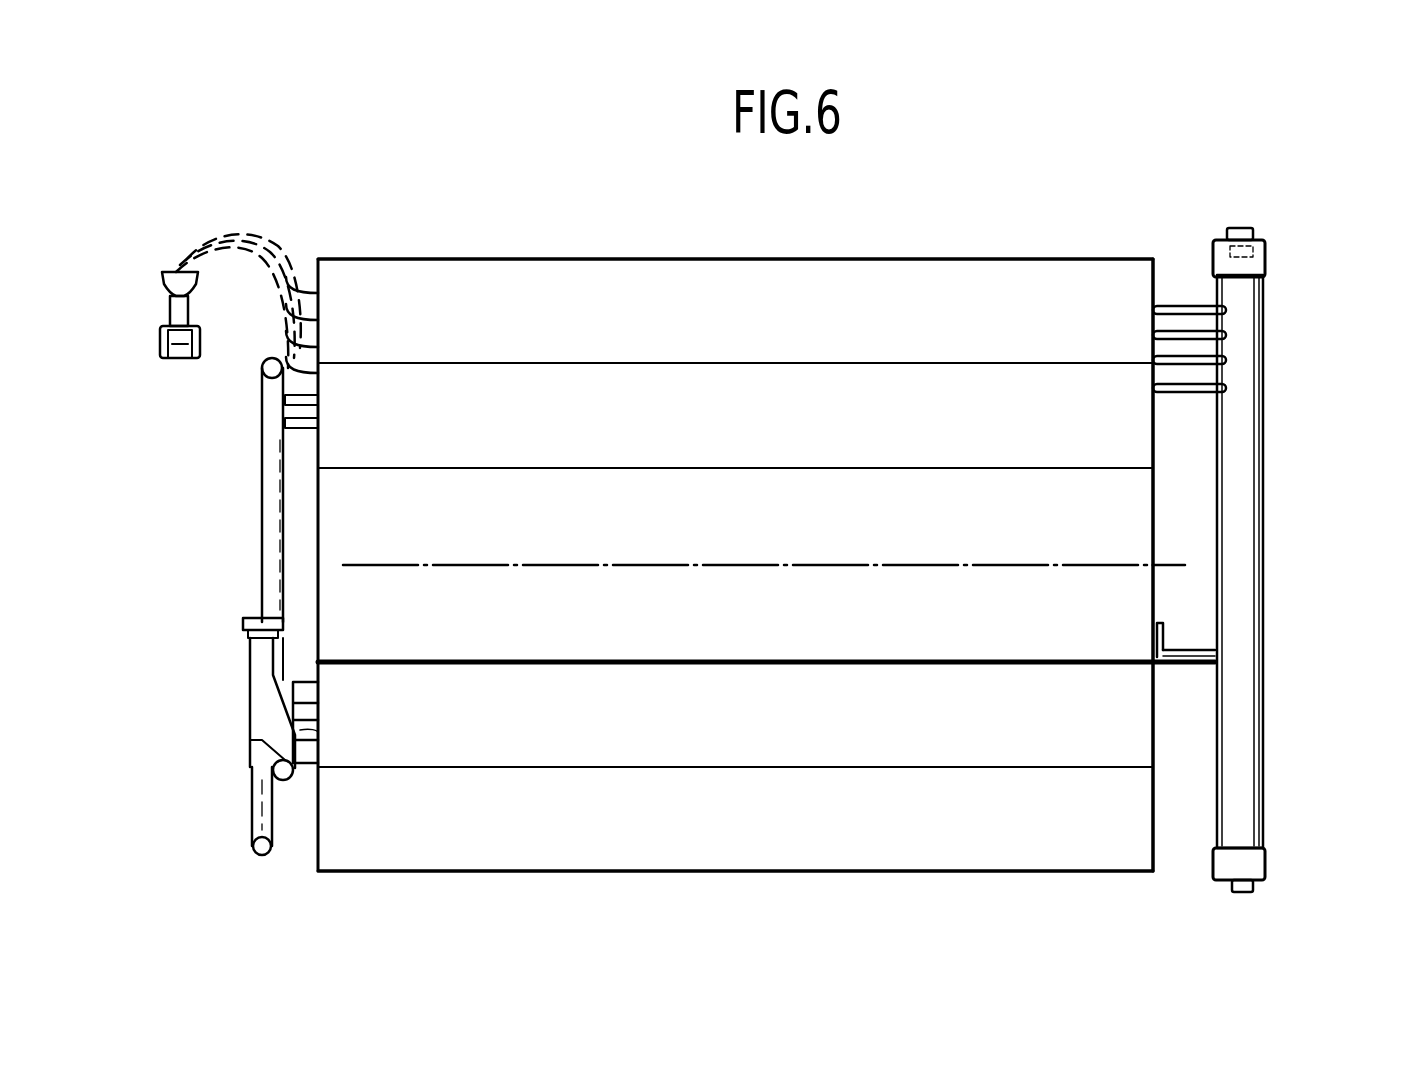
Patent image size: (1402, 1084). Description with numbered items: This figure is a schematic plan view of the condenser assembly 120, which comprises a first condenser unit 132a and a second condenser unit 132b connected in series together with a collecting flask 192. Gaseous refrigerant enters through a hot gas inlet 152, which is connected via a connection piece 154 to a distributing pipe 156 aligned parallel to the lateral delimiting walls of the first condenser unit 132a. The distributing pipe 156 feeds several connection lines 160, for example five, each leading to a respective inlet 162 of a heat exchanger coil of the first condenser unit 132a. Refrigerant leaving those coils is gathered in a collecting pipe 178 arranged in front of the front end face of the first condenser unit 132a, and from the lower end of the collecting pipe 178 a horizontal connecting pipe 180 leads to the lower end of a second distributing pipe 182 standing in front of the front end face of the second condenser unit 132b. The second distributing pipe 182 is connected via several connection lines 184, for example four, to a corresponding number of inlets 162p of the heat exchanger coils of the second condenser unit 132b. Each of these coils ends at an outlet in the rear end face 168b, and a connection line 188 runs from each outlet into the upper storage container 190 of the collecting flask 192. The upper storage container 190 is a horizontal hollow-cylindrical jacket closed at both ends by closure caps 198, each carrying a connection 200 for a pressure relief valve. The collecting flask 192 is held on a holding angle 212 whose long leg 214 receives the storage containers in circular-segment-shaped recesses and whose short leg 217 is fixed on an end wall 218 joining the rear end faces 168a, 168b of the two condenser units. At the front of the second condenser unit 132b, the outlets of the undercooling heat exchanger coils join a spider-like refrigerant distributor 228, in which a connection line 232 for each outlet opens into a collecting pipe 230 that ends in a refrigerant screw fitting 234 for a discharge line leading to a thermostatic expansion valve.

The condenser assembly 120 is at (1100, 232).
The first condenser unit 132a is at (470, 830).
The second condenser unit 132b is at (532, 315).
The hot gas inlet 152 is at (250, 625).
The connection piece 154 is at (262, 672).
The distributing pipe 156 is at (255, 760).
The connection lines 160 is at (324, 712).
The inlet 162 is at (313, 733).
The inlets 162p is at (318, 393).
The rear end face 168a is at (1152, 732).
The rear end face 168b is at (1150, 302).
The collecting pipe 178 is at (253, 805).
The horizontal connecting pipe 180 is at (272, 520).
The second distributing pipe 182 is at (285, 400).
The connection lines 184 is at (262, 372).
The connection line 188 is at (1196, 392).
The upper storage container 190 is at (1240, 432).
The collecting flask 192 is at (1264, 332).
The closure caps 198 is at (1250, 265).
The connection 200 is at (1242, 230).
The holding angle 212 is at (1162, 632).
The long leg 214 is at (1215, 655).
The short leg 217 is at (1157, 640).
The end wall 218 is at (1155, 487).
The spider-like refrigerant distributor 228 is at (160, 272).
The collecting pipe 230 is at (170, 318).
The connection line 232 is at (244, 262).
The refrigerant screw fitting 234 is at (160, 346).